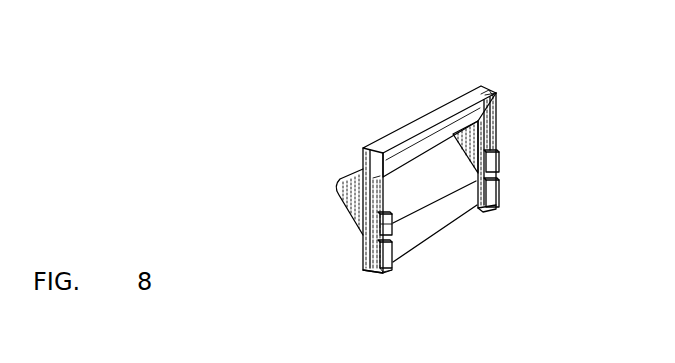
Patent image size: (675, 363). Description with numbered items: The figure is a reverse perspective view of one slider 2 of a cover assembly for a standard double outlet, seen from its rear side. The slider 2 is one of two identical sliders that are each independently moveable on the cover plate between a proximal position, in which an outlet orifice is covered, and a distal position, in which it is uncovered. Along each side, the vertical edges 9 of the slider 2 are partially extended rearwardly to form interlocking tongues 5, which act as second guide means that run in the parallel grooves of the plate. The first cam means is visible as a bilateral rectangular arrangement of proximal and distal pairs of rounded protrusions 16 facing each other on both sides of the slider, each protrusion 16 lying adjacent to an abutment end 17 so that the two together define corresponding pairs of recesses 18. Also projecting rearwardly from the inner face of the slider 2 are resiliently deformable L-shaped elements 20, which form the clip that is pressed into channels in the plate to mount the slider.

The slider 2 is at (411, 200).
The tongue 5 is at (498, 138).
The vertical edge 9 is at (355, 193).
The rounded protrusion 16 is at (495, 100).
The abutment end 17 is at (484, 98).
The recess 18 is at (497, 92).
The L-shaped element 20 is at (499, 162).